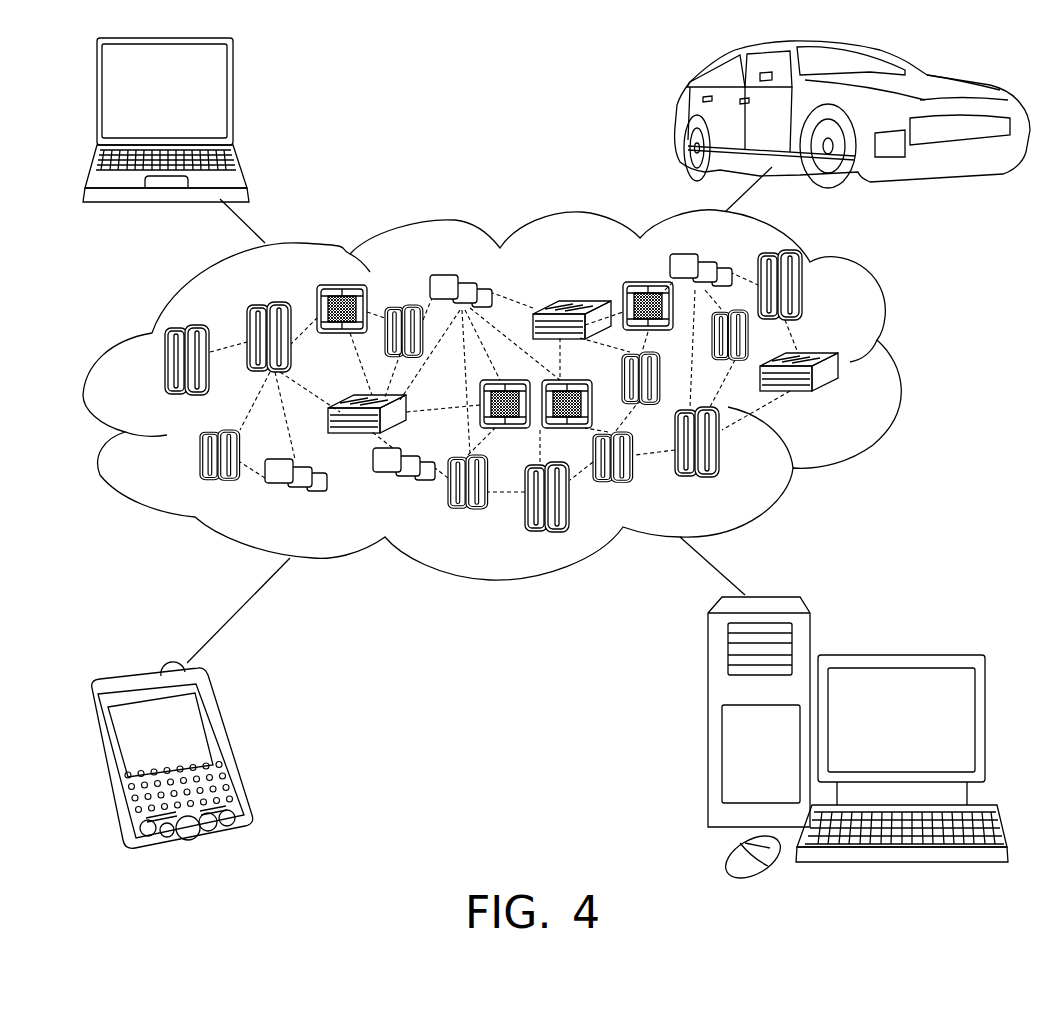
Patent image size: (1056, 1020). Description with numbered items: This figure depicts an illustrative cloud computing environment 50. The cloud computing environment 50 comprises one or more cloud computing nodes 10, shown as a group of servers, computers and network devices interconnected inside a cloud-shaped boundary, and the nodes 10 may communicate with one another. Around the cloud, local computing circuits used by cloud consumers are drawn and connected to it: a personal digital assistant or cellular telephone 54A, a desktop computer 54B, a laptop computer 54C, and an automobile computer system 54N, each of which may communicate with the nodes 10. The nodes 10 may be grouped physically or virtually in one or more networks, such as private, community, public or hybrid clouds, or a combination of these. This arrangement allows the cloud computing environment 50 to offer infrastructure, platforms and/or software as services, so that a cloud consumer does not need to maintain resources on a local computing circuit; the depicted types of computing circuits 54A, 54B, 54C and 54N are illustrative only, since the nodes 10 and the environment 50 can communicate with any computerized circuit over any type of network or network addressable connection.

The cloud computing node 10 is at (845, 400).
The cloud computing environment 50 is at (903, 367).
The personal digital assistant or cellular telephone 54A is at (227, 748).
The desktop computer 54B is at (898, 655).
The laptop computer 54C is at (235, 102).
The automobile computer system 54N is at (680, 117).